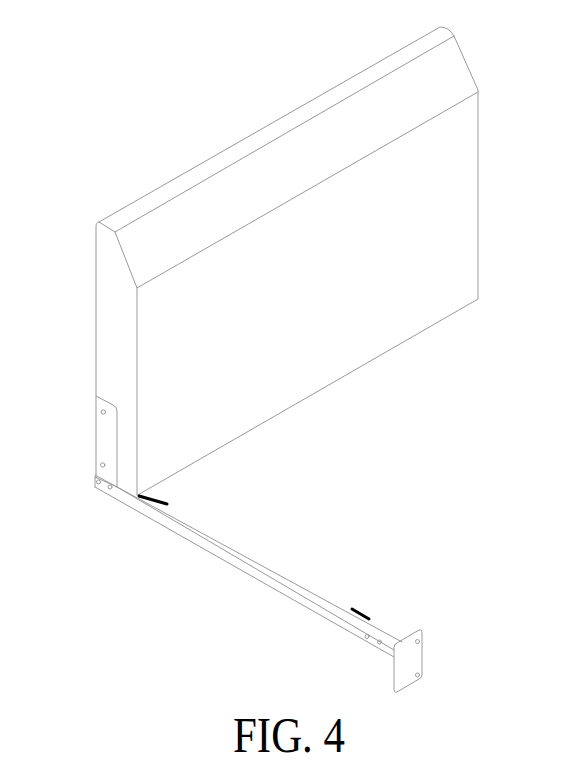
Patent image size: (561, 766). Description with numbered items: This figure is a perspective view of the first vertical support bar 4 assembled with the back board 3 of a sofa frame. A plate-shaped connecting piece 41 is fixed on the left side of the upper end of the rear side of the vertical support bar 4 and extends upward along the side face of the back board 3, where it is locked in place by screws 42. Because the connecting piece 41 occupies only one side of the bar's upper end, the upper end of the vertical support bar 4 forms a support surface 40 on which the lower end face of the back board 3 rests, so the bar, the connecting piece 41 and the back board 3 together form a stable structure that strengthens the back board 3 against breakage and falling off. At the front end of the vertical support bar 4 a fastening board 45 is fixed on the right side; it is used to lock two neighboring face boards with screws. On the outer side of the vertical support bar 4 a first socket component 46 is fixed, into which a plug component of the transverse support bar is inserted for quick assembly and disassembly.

The back board 3 is at (96, 338).
The vertical support bar 4 is at (227, 561).
The support surface 40 is at (148, 494).
The connecting piece 41 is at (98, 438).
The screws 42 is at (99, 412).
The fastening board 45 is at (419, 658).
The first socket component 46 is at (353, 608).